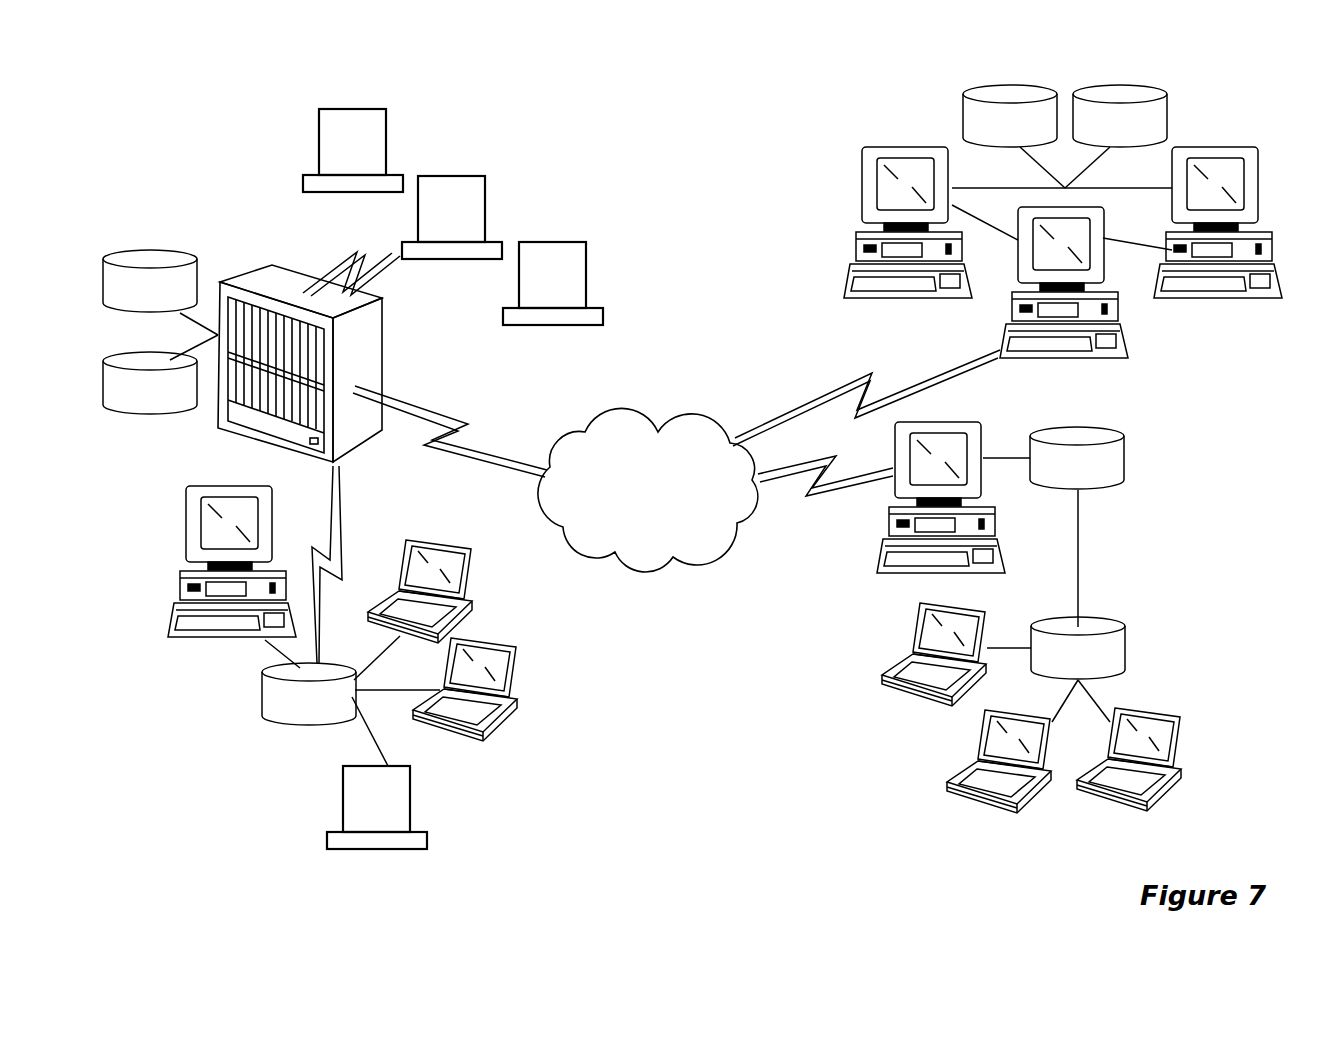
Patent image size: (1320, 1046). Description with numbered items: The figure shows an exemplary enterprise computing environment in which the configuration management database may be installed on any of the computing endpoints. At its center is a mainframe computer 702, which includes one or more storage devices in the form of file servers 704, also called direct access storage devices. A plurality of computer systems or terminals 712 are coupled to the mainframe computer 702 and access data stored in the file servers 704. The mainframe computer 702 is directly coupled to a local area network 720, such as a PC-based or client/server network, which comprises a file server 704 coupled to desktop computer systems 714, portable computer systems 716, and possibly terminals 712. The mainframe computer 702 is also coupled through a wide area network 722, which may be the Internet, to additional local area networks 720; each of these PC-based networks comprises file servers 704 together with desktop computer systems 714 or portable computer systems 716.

The mainframe computer 702 is at (375, 358).
The file server 704 is at (135, 297).
The computer system or terminal 712 is at (487, 146).
The desktop computer system 714 is at (878, 146).
The portable computer system 716 is at (456, 546).
The local area network 720 is at (248, 827).
The wide area network 722 is at (648, 490).